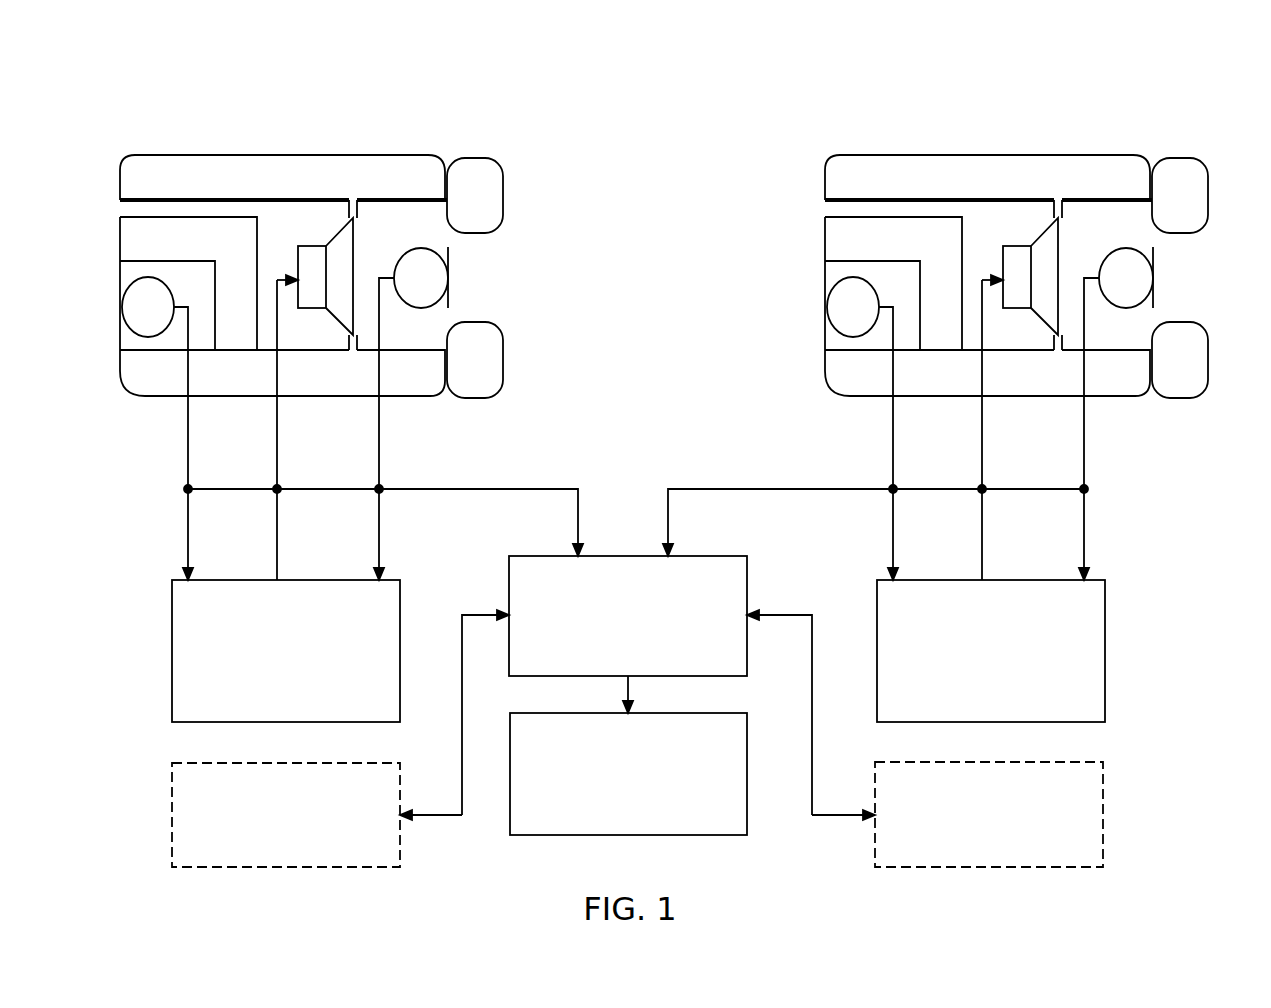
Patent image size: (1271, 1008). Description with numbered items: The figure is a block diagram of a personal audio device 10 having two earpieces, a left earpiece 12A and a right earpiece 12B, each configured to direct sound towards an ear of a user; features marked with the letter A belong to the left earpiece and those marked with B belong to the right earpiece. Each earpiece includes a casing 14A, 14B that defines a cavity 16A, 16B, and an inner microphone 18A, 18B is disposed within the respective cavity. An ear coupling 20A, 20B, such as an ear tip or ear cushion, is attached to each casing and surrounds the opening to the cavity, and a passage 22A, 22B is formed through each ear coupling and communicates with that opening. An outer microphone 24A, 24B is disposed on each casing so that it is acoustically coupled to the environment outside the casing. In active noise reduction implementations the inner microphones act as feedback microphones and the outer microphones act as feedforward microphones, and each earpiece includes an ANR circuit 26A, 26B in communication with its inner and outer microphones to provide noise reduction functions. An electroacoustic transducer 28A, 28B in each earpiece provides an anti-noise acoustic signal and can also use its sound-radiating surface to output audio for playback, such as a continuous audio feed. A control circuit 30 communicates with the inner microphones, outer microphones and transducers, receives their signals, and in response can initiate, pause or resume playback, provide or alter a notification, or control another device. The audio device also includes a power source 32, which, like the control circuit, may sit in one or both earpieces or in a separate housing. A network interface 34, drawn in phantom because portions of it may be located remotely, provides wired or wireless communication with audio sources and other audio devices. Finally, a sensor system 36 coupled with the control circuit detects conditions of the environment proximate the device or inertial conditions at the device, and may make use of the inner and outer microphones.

The personal audio device 10 is at (688, 96).
The left earpiece 12A is at (166, 103).
The right earpiece 12B is at (987, 114).
The casing 14A is at (276, 194).
The casing 14B is at (988, 283).
The cavity 16A is at (437, 322).
The cavity 16B is at (1041, 283).
The inner microphone 18A is at (402, 290).
The inner microphone 18B is at (1116, 414).
The ear coupling 20A is at (456, 207).
The ear coupling 20B is at (1180, 278).
The passage 22A is at (490, 265).
The passage 22B is at (1203, 263).
The outer microphone 24A is at (129, 319).
The outer microphone 24B is at (862, 428).
The ANR circuit 26A is at (267, 671).
The ANR circuit 26B is at (972, 671).
The electroacoustic transducer 28A is at (301, 294).
The electroacoustic transducer 28B is at (1018, 399).
The control circuit 30 is at (616, 656).
The power source 32 is at (616, 816).
The network interface 34 is at (274, 854).
The sensor system 36 is at (977, 842).